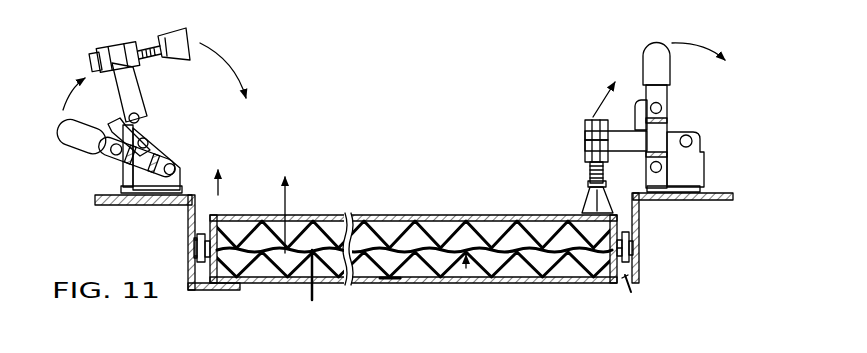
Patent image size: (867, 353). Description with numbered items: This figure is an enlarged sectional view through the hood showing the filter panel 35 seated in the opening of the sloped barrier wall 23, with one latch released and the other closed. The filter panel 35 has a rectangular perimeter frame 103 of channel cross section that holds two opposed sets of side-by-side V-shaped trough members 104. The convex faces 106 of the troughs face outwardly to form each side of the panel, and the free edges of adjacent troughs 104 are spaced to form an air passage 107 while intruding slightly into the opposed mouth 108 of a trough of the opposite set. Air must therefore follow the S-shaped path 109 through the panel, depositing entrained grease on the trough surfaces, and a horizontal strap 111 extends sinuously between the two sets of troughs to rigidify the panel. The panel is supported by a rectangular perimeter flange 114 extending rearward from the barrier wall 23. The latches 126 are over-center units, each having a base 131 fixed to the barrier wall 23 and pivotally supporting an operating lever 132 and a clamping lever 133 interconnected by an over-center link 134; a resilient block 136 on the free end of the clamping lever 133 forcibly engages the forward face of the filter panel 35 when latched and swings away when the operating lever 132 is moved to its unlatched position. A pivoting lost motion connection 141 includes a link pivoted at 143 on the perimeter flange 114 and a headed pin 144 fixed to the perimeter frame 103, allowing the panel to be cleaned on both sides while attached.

The barrier wall 23 is at (435, 232).
The filter panel 35 is at (414, 241).
The perimeter frame 103 is at (587, 282).
The trough members 104 is at (408, 268).
The convex faces 106 is at (390, 279).
The air passage 107 is at (466, 268).
The mouth 108 is at (518, 238).
The S-shaped path 109 is at (284, 206).
The horizontal strap 111 is at (493, 250).
The perimeter flange 114 is at (640, 268).
The latches 126 is at (52, 125).
The base 131 is at (687, 163).
The operating lever 132 is at (78, 133).
The clamping lever 133 is at (130, 88).
The over-center link 134 is at (125, 128).
The resilient block 136 is at (177, 34).
The pivoting lost motion connection 141 is at (628, 284).
The pivot 143 is at (635, 238).
The headed pin 144 is at (633, 253).